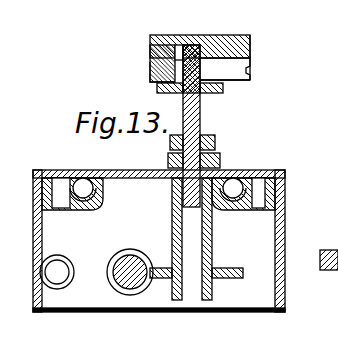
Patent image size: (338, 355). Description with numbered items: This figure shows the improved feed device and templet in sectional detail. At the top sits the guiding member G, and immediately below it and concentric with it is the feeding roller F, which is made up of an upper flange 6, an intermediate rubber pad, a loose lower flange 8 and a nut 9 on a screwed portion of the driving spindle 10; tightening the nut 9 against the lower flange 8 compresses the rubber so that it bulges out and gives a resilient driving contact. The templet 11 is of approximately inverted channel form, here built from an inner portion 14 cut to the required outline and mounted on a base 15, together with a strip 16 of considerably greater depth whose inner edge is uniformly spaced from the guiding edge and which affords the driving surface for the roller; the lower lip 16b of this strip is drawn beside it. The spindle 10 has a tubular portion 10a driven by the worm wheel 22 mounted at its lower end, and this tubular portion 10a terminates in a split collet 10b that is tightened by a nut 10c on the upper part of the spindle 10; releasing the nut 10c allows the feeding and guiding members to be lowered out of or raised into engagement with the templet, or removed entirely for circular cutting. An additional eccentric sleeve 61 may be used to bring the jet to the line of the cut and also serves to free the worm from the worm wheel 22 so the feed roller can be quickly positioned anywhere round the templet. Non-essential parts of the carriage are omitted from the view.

The guiding member G is at (195, 53).
The base 15 is at (222, 40).
The inner portion 14 is at (250, 44).
The strip 16 is at (150, 52).
The side block lower portion 16b is at (150, 68).
The upper flange 6 is at (203, 62).
The templet 11 is at (251, 71).
The feeding roller F is at (207, 73).
The nut 9 is at (181, 91).
The lower flange 8 is at (208, 87).
The driving spindle 10 is at (195, 123).
The split collet 10b is at (216, 141).
The nut 10c is at (170, 149).
The tubular portion 10a is at (285, 170).
The eccentric sleeve 61 is at (233, 168).
The worm wheel 22 is at (233, 268).